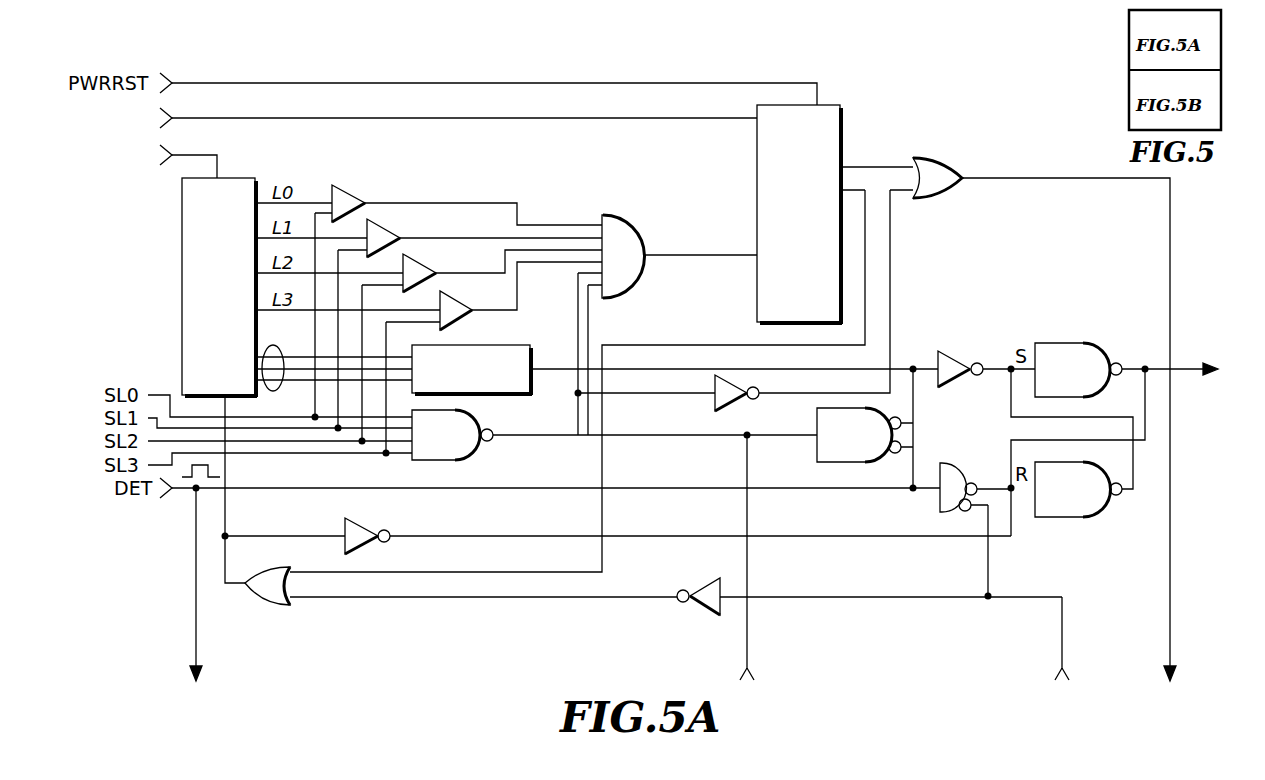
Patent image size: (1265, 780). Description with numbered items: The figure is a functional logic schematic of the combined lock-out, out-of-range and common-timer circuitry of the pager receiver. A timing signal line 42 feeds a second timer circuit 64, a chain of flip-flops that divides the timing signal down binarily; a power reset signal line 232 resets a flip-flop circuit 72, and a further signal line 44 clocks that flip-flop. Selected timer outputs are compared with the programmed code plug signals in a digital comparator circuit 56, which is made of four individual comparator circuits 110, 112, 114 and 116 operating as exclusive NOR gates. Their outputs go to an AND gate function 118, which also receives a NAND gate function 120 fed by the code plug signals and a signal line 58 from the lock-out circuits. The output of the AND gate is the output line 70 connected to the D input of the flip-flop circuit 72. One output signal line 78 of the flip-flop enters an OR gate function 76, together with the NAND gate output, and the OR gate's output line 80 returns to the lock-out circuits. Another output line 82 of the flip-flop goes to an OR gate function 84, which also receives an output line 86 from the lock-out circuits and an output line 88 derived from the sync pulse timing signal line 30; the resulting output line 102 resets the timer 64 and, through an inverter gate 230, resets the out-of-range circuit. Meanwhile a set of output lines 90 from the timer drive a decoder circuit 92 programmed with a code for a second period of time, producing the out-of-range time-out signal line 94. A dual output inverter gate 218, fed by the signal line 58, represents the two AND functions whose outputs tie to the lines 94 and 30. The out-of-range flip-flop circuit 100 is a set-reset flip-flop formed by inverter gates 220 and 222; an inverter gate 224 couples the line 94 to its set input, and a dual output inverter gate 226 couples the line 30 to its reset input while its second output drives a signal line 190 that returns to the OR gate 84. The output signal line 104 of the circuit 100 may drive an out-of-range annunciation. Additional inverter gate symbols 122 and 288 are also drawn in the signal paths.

The power reset signal line 232 is at (262, 83).
The signal line 44 is at (298, 118).
The timing signal line 42 is at (186, 155).
The second timer circuit 64 is at (182, 215).
The digital comparator circuit 56 is at (468, 170).
The comparator circuit 110 is at (336, 185).
The comparator circuit 112 is at (373, 229).
The comparator circuit 114 is at (409, 266).
The comparator circuit 116 is at (452, 305).
The AND gate function 118 is at (610, 213).
The output line 70 is at (735, 260).
The flip-flop circuit 72 is at (841, 106).
The output signal line 78 is at (861, 167).
The OR gate function 76 is at (926, 158).
The output line 80 is at (1168, 200).
The output lines 90 is at (279, 360).
The decoder circuit 92 is at (515, 345).
The out-of-range time-out signal line 94 is at (913, 362).
The NAND gate function 120 is at (478, 424).
The inverter 122 is at (718, 395).
The dual output inverter gate 218 is at (815, 440).
The inverter gate 224 is at (941, 352).
The inverter gate 220 is at (1037, 343).
The inverter gate 222 is at (1070, 518).
The dual output inverter gate 226 is at (944, 462).
The out-of-range flip-flop circuit 100 is at (1158, 354).
The output signal line 104 is at (1185, 367).
The sync pulse timing signal line 30 is at (523, 488).
The output line 102 is at (229, 530).
The inverter gate 230 is at (378, 530).
The output line 82 is at (440, 571).
The OR gate function 84 is at (265, 605).
The output line 86 is at (435, 597).
The output line 88 is at (987, 546).
The inverter 288 is at (681, 578).
The signal line 58 is at (749, 586).
The signal line 190 is at (1062, 594).